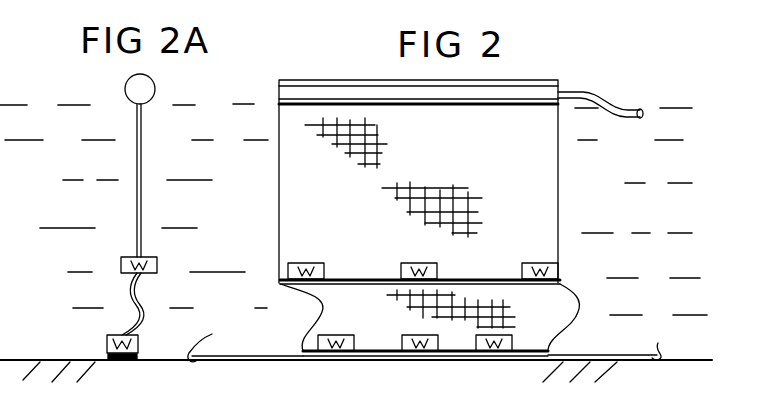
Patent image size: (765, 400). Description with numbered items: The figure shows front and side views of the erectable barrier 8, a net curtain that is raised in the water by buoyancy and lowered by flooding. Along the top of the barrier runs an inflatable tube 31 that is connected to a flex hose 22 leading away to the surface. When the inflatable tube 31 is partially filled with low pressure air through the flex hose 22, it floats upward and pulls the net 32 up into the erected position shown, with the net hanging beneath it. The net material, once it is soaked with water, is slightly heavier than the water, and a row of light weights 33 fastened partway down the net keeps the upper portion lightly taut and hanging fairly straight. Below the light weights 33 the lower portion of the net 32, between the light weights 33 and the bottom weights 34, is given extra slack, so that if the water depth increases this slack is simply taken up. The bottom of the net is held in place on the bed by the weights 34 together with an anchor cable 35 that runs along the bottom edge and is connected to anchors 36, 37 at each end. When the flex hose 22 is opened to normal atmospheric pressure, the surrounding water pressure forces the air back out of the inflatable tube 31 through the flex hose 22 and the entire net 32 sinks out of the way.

In FIG. 2, the erectable barrier 8 is at (275, 167).
In FIG. 2, the flex hose 22 is at (627, 120).
In FIG. 2A, the inflatable tube 31 is at (155, 82).
In FIG. 2, the inflatable tube 31 is at (279, 83).
In FIG. 2A, the net 32 is at (145, 181).
In FIG. 2, the net 32 is at (560, 190).
In FIG. 2A, the light weights 33 is at (158, 264).
In FIG. 2, the light weights 33 is at (559, 268).
In FIG. 2A, the weights 34 is at (140, 343).
In FIG. 2, the weights 34 is at (517, 343).
In FIG. 2, the anchor cable 35 is at (595, 353).
In FIG. 2, the anchor 36 is at (669, 341).
In FIG. 2, the anchor 37 is at (245, 342).